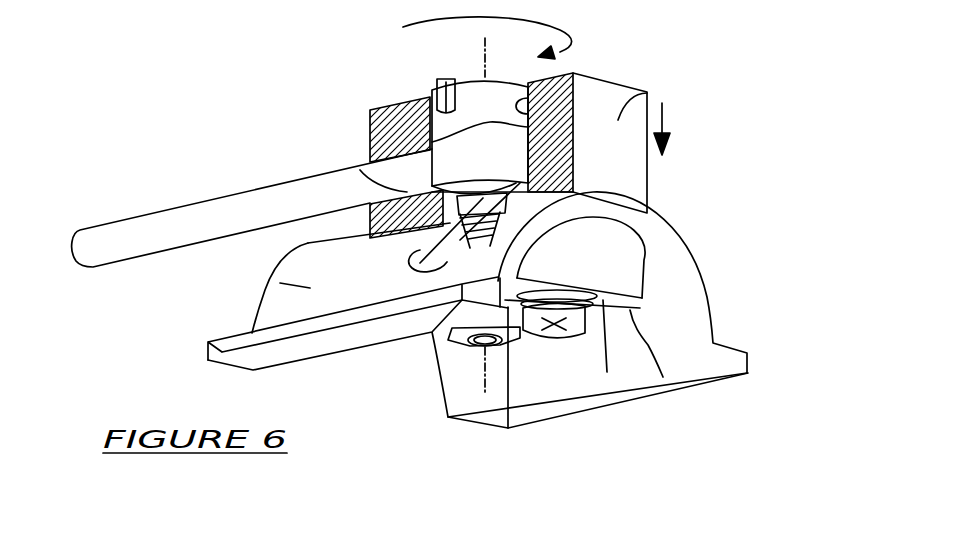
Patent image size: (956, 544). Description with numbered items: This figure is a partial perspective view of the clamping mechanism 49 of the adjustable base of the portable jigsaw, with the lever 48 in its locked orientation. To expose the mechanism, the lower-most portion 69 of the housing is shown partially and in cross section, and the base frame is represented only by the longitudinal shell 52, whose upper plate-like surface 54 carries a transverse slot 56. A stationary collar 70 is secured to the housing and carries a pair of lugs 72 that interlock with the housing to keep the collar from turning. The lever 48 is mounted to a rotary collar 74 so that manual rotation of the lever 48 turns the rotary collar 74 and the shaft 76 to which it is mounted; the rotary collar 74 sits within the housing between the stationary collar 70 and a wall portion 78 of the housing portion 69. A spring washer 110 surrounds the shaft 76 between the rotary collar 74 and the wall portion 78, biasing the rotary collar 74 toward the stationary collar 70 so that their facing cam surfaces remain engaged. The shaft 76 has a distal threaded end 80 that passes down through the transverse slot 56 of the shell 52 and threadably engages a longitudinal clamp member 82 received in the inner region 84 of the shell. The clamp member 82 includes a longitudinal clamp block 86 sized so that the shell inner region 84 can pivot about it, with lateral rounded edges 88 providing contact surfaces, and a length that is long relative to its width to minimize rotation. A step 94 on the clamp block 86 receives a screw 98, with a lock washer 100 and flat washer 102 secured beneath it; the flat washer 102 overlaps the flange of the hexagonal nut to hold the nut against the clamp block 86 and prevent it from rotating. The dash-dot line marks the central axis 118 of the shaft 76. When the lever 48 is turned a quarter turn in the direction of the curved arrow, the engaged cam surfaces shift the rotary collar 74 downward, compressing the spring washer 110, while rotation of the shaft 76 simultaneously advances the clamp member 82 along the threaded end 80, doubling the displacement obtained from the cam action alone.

The lever 48 is at (108, 226).
The clamping mechanism 49 is at (274, 49).
The longitudinal shell 52 is at (707, 297).
The base plate 54 is at (272, 283).
The transverse slot 56 is at (430, 265).
The lower-most portion of the housing 69 is at (647, 92).
The stationary collar 70 is at (492, 77).
The lugs 72 is at (432, 90).
The rotary collar 74 is at (510, 138).
The shaft 76 is at (647, 212).
The wall portion 78 is at (308, 243).
The distal threaded end 80 is at (484, 347).
The longitudinal clamp member 82 is at (621, 314).
The inner region 84 is at (678, 302).
The longitudinal clamp block 86 is at (607, 372).
The lateral rounded edges 88 is at (642, 262).
The step 94 is at (694, 383).
The screw 98 is at (558, 337).
The lock washer 100 is at (505, 428).
The flat washer 102 is at (625, 298).
The spring washer 110 is at (380, 180).
The central axis 118 is at (482, 42).